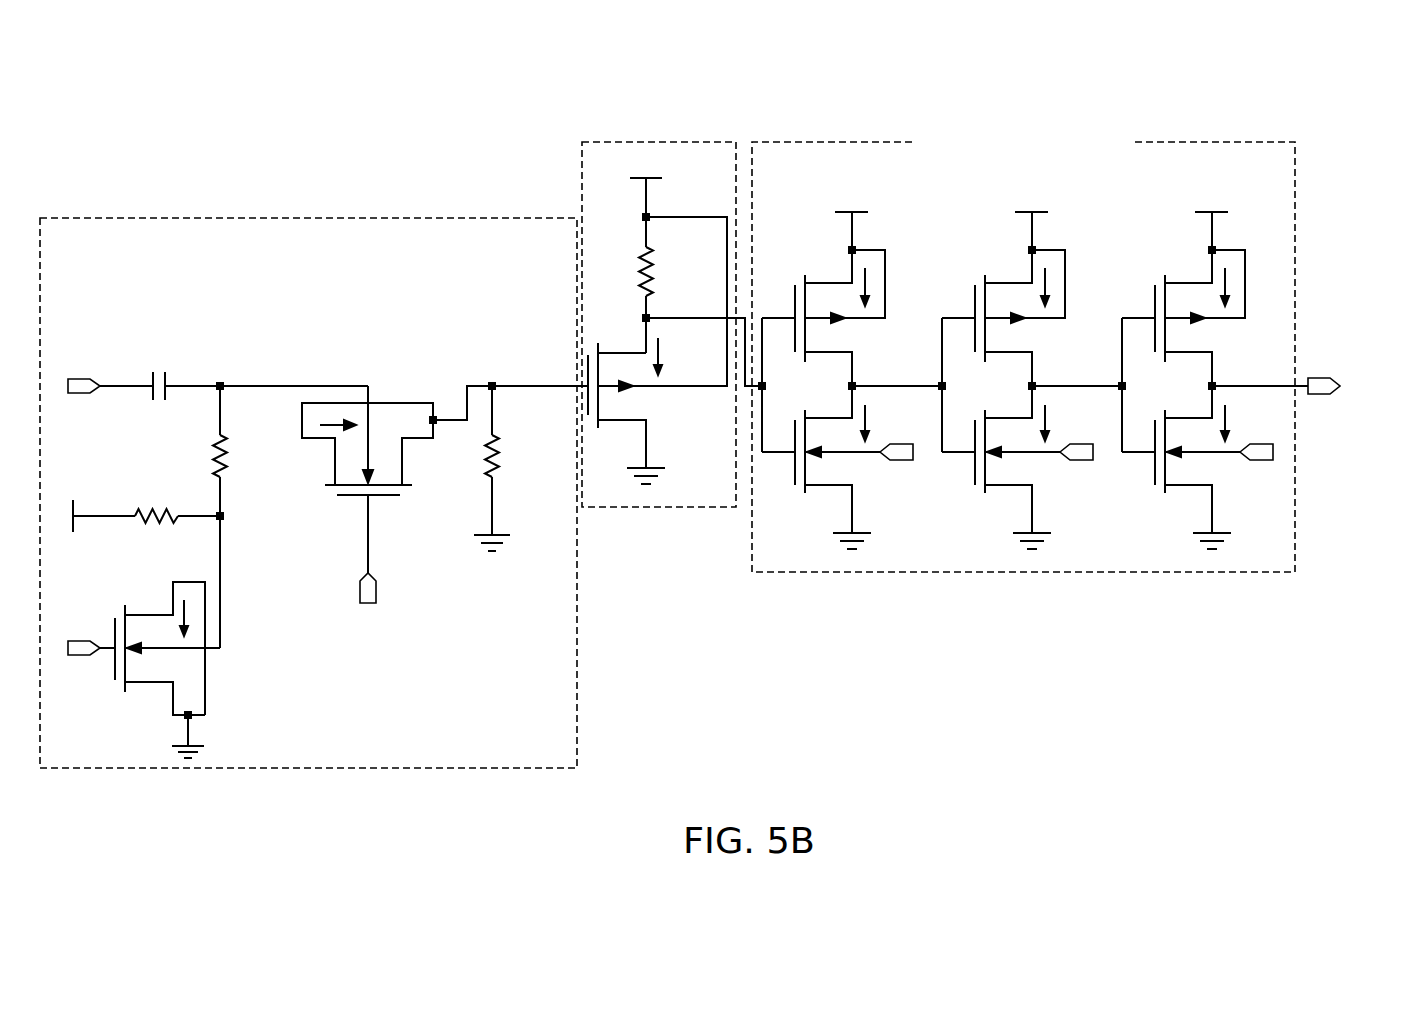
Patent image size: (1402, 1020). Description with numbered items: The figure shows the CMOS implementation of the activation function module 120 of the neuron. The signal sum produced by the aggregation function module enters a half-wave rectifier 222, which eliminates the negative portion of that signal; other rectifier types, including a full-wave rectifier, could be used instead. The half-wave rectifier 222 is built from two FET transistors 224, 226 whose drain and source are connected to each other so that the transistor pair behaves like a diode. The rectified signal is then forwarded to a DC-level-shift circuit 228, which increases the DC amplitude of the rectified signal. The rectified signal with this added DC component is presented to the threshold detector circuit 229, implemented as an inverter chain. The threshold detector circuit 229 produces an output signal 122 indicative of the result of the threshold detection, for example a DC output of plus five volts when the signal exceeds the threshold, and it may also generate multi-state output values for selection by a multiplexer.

The activation function module 120 is at (165, 66).
The output signal 122 is at (1300, 384).
The half-wave rectifier 222 is at (112, 218).
The FET transistor 224 is at (334, 492).
The FET transistor 226 is at (206, 683).
The DC-level-shift circuit 228 is at (655, 140).
The threshold detector circuit 229 is at (826, 140).